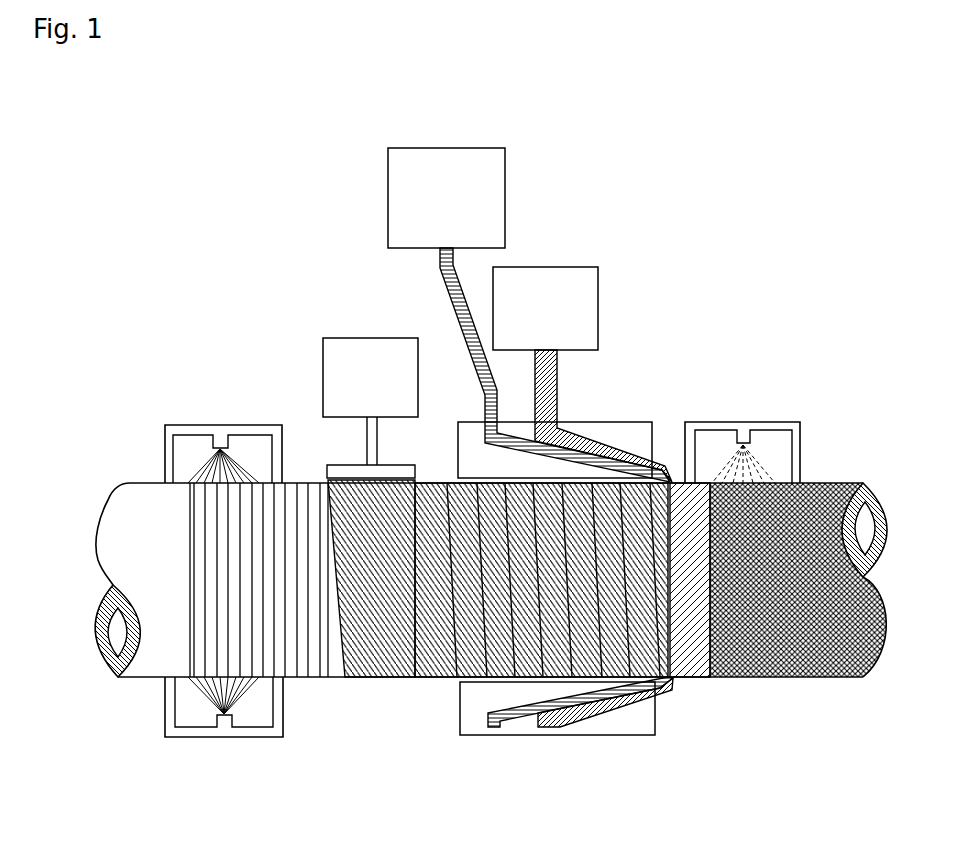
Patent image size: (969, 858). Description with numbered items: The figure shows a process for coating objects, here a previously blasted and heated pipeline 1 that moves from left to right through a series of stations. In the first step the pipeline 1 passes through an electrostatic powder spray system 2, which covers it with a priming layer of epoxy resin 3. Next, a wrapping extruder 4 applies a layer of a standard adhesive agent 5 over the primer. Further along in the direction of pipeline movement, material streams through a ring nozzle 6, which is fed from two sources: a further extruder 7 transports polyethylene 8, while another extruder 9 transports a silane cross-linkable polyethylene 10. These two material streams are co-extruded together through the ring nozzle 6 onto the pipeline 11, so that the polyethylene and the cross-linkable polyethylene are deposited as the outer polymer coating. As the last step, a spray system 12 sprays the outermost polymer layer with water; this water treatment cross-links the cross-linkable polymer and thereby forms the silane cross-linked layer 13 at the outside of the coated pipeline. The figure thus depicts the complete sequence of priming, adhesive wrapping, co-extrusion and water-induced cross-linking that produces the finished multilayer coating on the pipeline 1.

The pipeline 1 is at (103, 503).
The electrostatic powder spray system 2 is at (178, 426).
The priming layer of epoxy resin 3 is at (302, 662).
The wrapping extruder 4 is at (322, 362).
The layer of standard adhesive agent 5 is at (443, 662).
The ring nozzle 6 is at (636, 422).
The further extruder 7 is at (388, 190).
The polyethylene 8 is at (450, 315).
The another extruder 9 is at (546, 267).
The silane cross-linkable polyethylene 10 is at (548, 390).
The pipeline with co-extruded material streams 11 is at (693, 642).
The spray system 12 is at (743, 421).
The silane cross-linked layer 13 is at (782, 642).